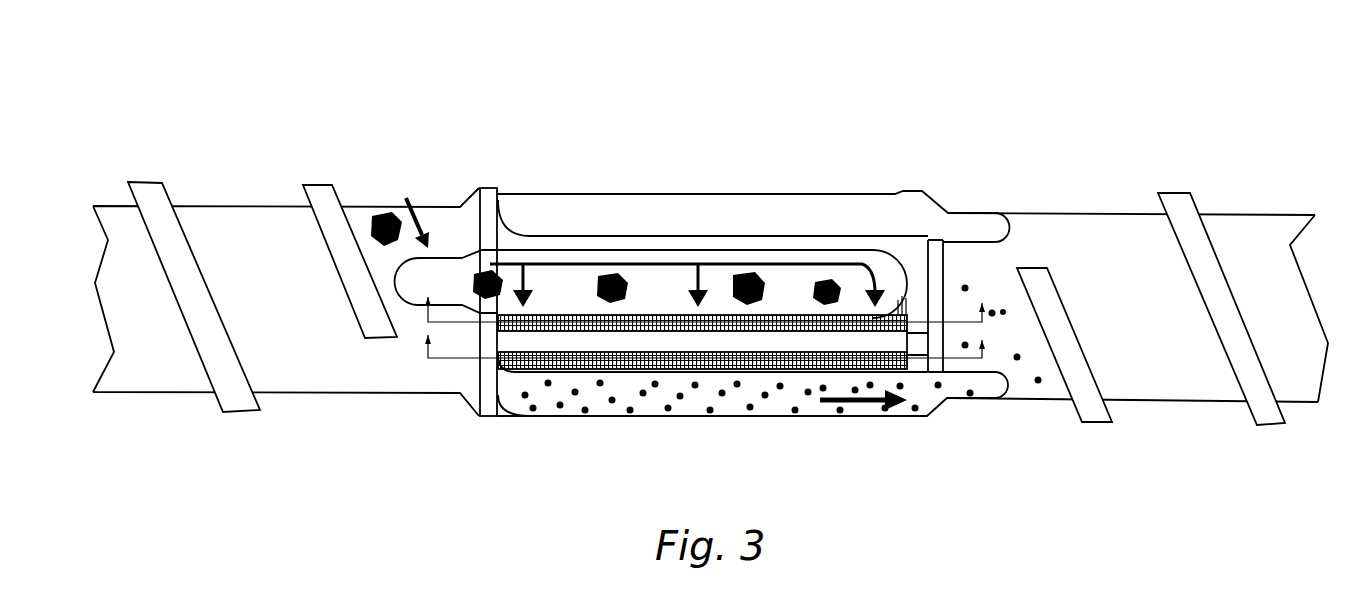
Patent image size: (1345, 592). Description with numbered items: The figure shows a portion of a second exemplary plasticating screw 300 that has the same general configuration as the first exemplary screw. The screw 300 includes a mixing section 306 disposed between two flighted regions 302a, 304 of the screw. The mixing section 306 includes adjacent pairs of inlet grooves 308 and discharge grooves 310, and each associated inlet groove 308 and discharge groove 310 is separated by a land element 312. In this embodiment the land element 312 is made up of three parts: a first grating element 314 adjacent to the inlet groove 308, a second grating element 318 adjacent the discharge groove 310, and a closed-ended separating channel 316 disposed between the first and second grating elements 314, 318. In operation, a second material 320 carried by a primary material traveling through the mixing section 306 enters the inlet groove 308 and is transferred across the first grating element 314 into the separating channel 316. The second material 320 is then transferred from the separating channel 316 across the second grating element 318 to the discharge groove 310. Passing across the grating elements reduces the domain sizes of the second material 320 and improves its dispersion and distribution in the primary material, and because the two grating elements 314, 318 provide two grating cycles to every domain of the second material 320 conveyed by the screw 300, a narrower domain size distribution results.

The plasticating screw 300 is at (250, 90).
The flighted region 302a is at (303, 442).
The flighted region 304 is at (1158, 433).
The mixing section 306 is at (713, 186).
The inlet groove 308 is at (880, 267).
The discharge groove 310 is at (517, 390).
The land element 312 is at (907, 343).
The first grating element 314 is at (497, 323).
The separating channel 316 is at (618, 333).
The second grating element 318 is at (840, 367).
The second material 320 is at (387, 213).